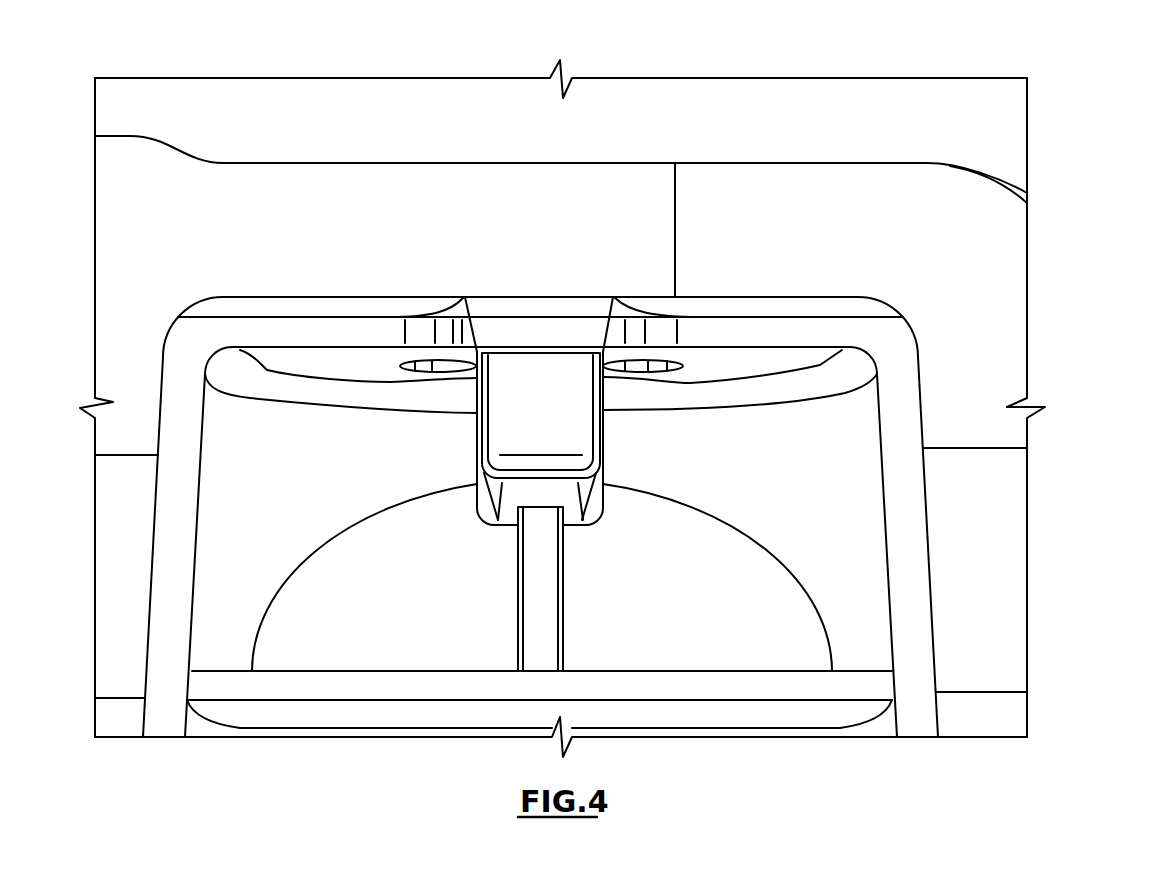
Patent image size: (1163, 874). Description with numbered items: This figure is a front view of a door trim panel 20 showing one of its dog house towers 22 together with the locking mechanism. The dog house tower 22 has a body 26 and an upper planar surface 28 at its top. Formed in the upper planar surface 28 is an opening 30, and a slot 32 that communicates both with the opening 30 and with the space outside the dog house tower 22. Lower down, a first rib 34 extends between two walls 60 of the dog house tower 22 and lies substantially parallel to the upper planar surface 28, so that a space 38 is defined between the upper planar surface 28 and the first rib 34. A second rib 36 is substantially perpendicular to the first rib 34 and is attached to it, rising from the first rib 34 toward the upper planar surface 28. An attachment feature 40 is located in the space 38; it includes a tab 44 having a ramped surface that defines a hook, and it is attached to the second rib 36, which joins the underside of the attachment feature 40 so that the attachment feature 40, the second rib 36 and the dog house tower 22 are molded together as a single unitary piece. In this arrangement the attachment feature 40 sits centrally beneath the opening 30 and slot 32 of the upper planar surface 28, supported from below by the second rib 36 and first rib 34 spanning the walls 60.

The door trim panel 20 is at (1063, 88).
The dog house tower 22 is at (898, 376).
The body 26 is at (177, 535).
The upper planar surface 28 is at (298, 296).
The opening 30 is at (445, 367).
The slot 32 is at (565, 310).
The first rib 34 is at (789, 684).
The second rib 36 is at (545, 604).
The space 38 is at (812, 533).
The attachment feature 40 is at (570, 423).
The tab 44 is at (565, 437).
The walls 60 is at (918, 681).